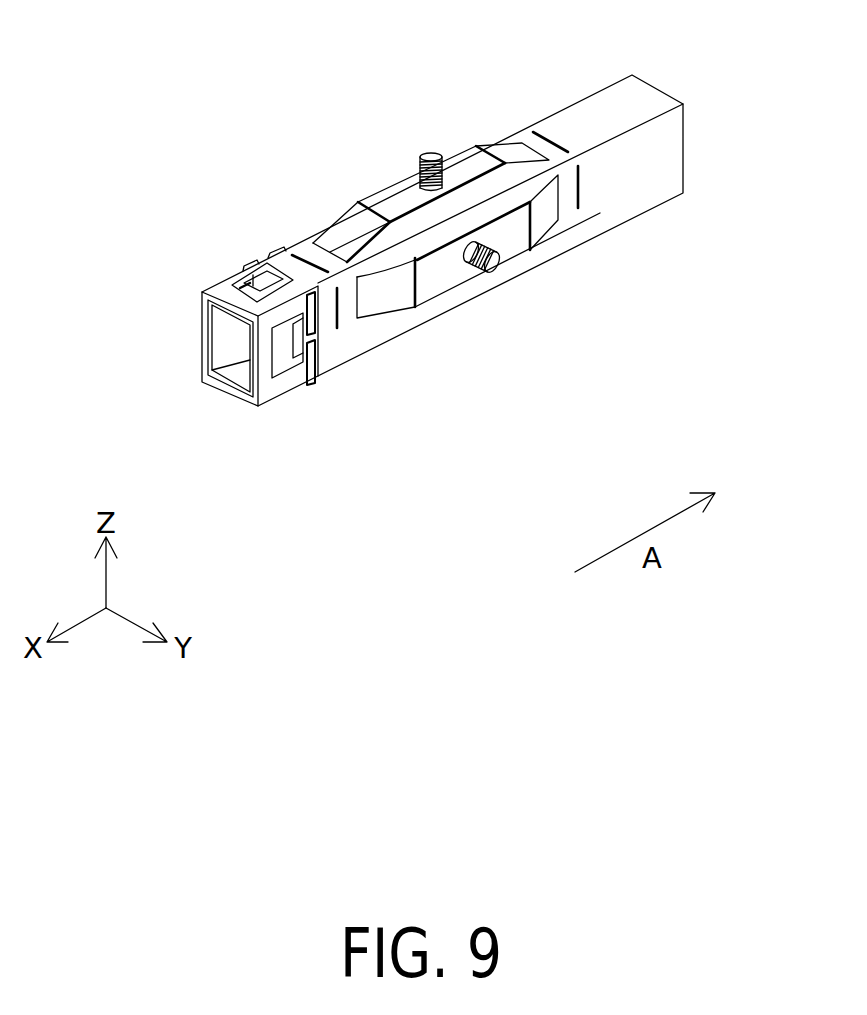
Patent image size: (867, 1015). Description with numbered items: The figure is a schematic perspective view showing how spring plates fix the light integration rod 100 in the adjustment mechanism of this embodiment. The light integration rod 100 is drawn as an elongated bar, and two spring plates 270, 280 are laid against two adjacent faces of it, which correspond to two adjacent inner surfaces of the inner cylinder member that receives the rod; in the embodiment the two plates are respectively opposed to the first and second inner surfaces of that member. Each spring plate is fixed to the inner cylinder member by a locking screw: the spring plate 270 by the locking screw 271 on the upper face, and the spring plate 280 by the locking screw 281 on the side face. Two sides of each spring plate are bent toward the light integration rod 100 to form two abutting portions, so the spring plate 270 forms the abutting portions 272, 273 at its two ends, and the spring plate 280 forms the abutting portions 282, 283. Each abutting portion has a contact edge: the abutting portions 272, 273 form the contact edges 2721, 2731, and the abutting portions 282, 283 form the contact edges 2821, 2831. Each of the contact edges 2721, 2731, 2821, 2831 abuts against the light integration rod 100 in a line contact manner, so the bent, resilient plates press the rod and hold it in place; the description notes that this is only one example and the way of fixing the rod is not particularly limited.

The light integration rod 100 is at (612, 103).
The spring plate 270 is at (415, 152).
The locking screw 271 is at (430, 154).
The abutting portion 272 is at (515, 98).
The contact edge 2721 is at (528, 146).
The abutting portion 273 is at (326, 199).
The contact edge 2731 is at (323, 246).
The spring plate 280 is at (495, 289).
The locking screw 281 is at (498, 270).
The abutting portion 282 is at (596, 247).
The contact edge 2821 is at (561, 203).
The abutting portion 283 is at (379, 335).
The contact edge 2831 is at (351, 306).